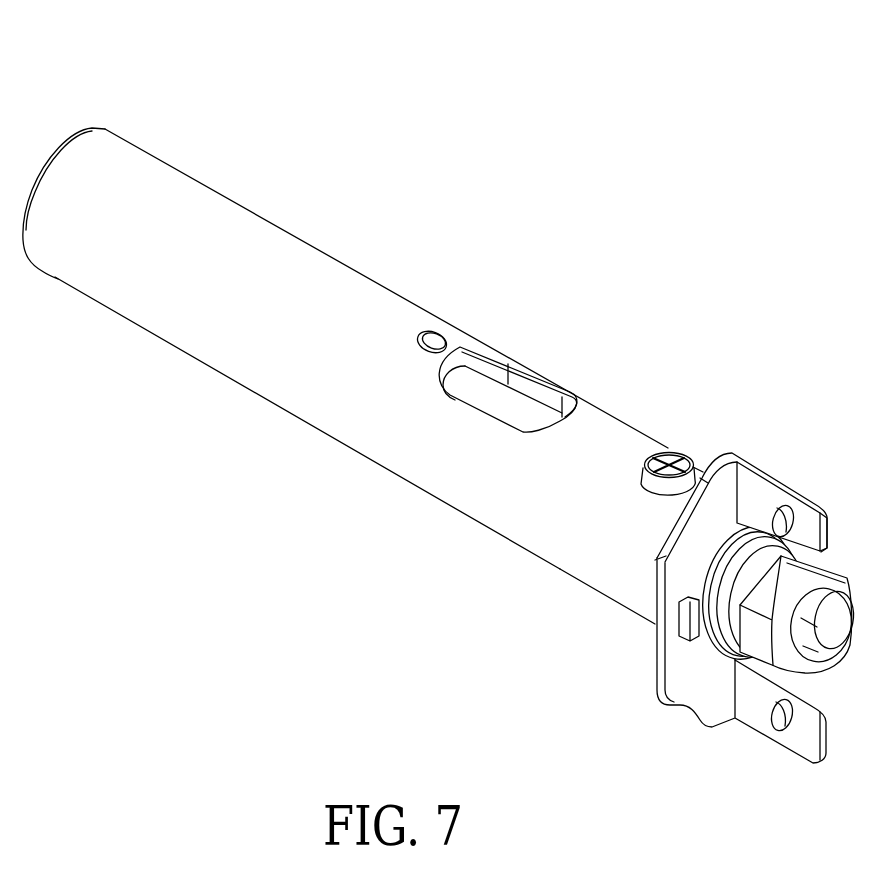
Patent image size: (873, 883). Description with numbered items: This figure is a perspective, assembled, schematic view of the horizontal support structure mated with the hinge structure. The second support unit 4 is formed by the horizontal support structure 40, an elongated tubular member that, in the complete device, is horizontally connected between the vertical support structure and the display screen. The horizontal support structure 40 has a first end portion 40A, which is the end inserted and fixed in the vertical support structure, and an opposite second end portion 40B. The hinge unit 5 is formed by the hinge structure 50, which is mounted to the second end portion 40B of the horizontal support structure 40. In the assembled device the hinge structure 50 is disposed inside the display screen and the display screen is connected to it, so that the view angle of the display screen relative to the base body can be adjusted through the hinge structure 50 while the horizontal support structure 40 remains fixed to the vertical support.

The second support unit 4 is at (377, 196).
The horizontal support structure 40 is at (352, 305).
The first end portion 40A is at (85, 155).
The second end portion 40B is at (638, 592).
The hinge unit 5 is at (773, 382).
The hinge structure 50 is at (717, 497).